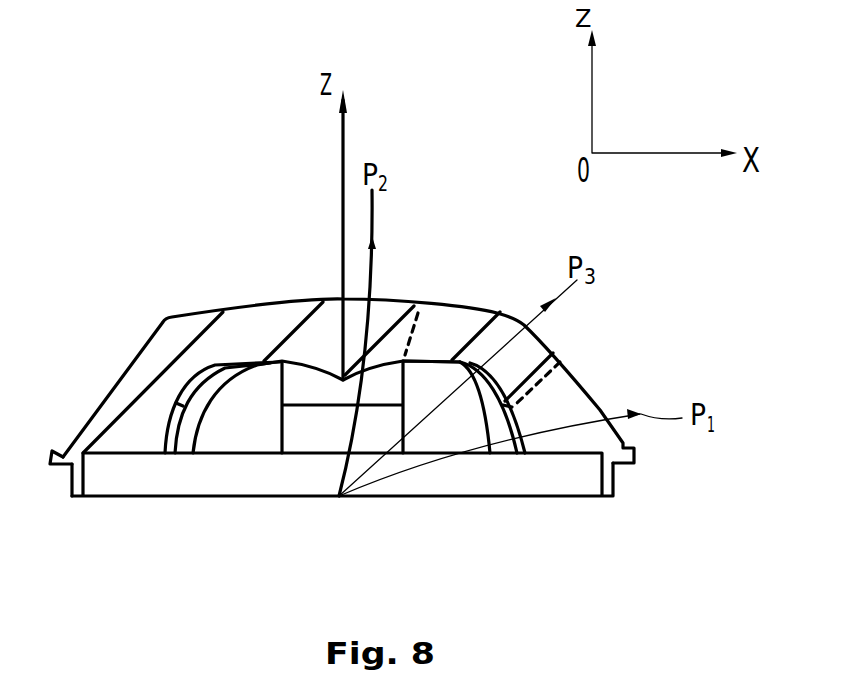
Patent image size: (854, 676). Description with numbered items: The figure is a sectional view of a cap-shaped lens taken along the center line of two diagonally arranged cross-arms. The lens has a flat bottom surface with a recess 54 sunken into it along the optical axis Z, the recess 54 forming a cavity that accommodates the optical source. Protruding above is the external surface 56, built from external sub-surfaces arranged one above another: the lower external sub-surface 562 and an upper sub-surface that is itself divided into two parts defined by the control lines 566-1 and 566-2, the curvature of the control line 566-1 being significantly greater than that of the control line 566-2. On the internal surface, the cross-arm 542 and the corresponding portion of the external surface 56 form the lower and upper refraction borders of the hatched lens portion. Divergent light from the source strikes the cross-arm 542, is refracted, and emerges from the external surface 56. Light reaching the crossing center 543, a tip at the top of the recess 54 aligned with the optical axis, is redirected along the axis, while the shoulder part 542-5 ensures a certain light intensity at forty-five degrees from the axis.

The recess 54 is at (248, 458).
The cross-arm 542 is at (187, 380).
The shoulder part 542-5 is at (438, 358).
The crossing center 543 is at (320, 367).
The external surface 56 is at (585, 357).
The external sub-surface 562 is at (110, 366).
The control line 566-1 is at (165, 315).
The control line 566-2 is at (410, 302).